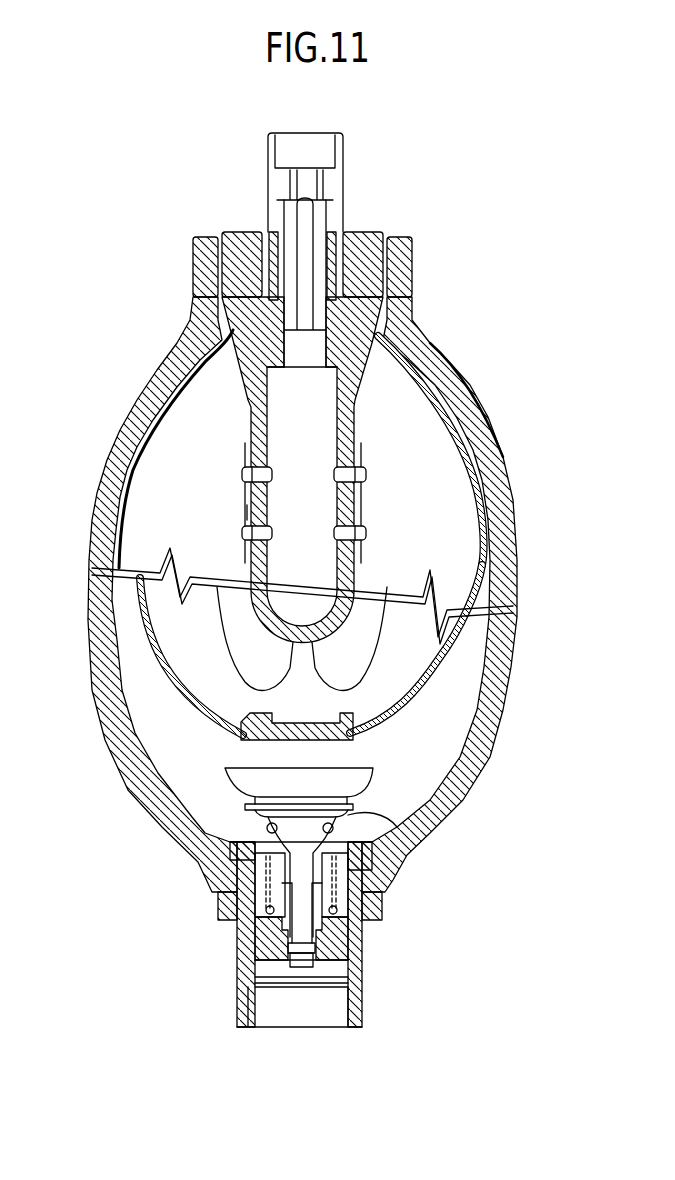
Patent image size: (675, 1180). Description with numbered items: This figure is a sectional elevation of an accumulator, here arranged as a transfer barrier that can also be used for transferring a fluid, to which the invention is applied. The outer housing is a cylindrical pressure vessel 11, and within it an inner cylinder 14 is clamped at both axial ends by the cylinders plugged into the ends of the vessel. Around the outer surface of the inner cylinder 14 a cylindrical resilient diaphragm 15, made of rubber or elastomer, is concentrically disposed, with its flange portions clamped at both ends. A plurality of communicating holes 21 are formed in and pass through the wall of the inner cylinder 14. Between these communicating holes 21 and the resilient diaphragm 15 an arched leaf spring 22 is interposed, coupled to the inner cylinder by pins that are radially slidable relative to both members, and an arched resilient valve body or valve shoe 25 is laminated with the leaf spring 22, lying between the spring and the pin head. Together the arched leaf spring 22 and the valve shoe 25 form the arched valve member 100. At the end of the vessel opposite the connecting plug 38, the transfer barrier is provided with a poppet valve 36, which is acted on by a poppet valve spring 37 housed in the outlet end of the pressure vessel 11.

The cylindrical pressure vessel 11 is at (512, 515).
The inner cylinder 14 is at (353, 428).
The cylindrical resilient diaphragm 15 is at (486, 484).
The communicating holes 21 is at (250, 492).
The arched leaf spring 22 is at (360, 513).
The resilient valve body or valve shoe 25 is at (355, 456).
The poppet valve 36 is at (407, 853).
The poppet valve spring 37 is at (390, 895).
The connecting plug 38 is at (327, 223).
The arched valve member 100 is at (247, 513).